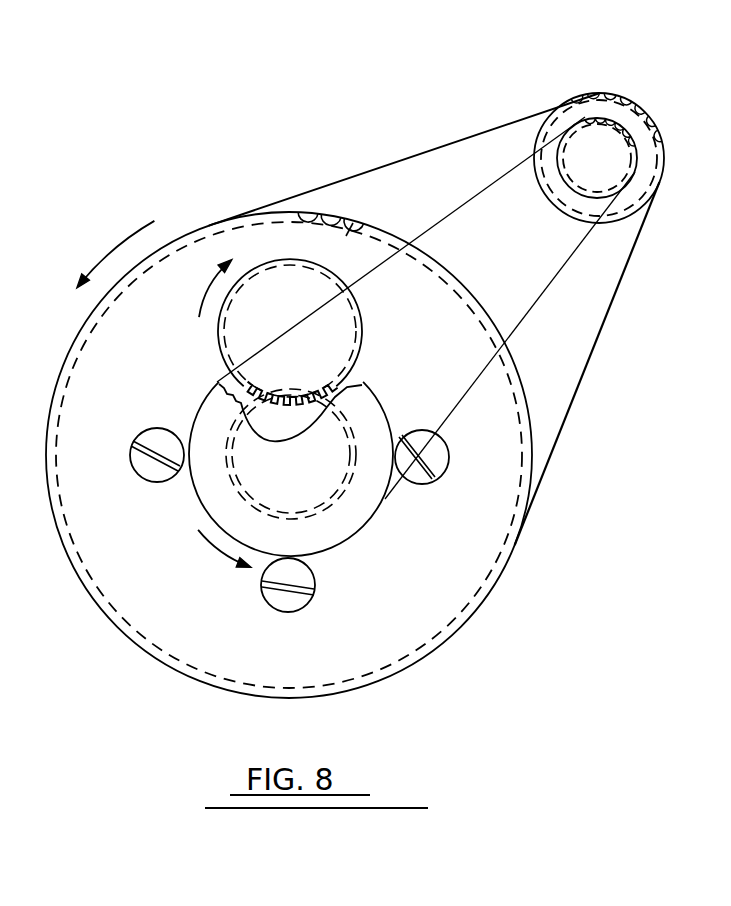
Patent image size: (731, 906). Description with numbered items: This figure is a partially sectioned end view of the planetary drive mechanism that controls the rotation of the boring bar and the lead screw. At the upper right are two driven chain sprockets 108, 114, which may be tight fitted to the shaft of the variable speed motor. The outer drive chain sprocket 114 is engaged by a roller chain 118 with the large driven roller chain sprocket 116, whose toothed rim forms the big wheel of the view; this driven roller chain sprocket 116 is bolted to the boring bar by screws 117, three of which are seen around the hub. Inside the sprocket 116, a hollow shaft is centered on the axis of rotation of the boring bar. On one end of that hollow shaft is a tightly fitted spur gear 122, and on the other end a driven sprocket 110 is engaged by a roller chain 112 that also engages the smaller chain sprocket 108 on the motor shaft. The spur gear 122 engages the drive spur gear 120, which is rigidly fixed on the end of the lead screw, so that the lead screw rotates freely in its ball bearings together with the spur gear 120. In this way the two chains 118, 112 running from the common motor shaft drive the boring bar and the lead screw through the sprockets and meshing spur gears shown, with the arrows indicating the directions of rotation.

The drive chain sprocket 108 is at (621, 152).
The driven sprocket 110 is at (220, 505).
The roller chain 112 is at (452, 205).
The drive chain sprocket 114 is at (615, 94).
The driven roller chain sprocket 116 is at (340, 243).
The screws 117 is at (310, 600).
The roller chain 118 is at (375, 168).
The drive spur gear 120 is at (338, 333).
The spur gear 122 is at (312, 427).